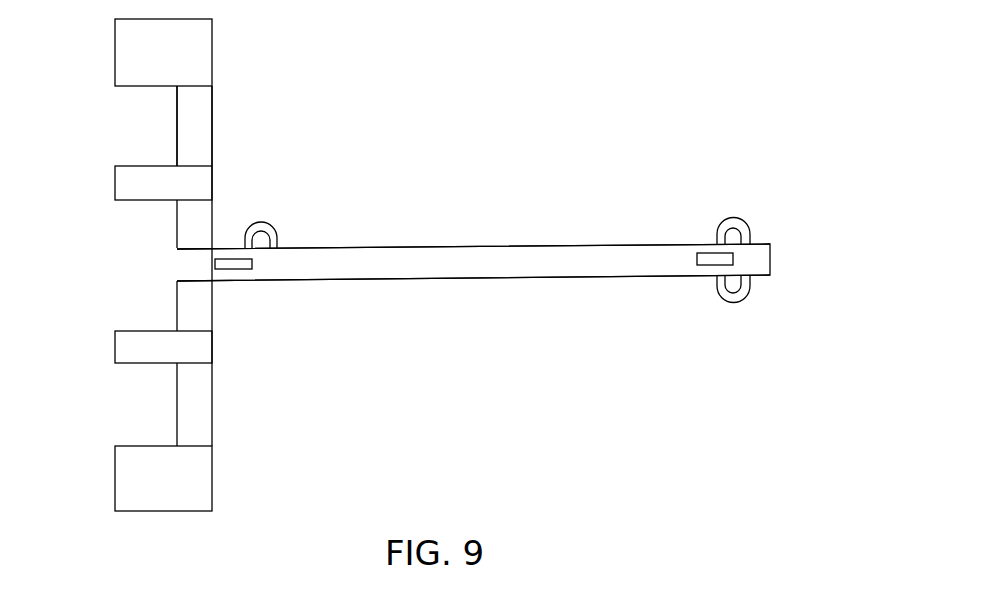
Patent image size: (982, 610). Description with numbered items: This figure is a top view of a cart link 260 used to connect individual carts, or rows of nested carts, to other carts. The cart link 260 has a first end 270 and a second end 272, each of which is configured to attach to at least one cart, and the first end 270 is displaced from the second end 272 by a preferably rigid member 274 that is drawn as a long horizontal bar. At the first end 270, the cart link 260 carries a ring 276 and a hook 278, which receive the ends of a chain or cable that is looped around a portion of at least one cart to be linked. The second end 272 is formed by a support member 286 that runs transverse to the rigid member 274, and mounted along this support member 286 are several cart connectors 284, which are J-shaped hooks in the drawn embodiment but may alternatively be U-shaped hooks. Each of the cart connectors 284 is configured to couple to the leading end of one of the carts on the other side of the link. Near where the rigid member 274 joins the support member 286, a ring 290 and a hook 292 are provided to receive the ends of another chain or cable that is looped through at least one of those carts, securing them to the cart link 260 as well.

The cart link 260 is at (494, 137).
The first end 270 is at (765, 243).
The second end 272 is at (205, 382).
The rigid member 274 is at (508, 269).
The ring 276 is at (733, 220).
The hook 278 is at (705, 253).
The cart connectors 284 is at (132, 55).
The support member 286 is at (205, 135).
The ring 290 is at (265, 228).
The hook 292 is at (251, 267).